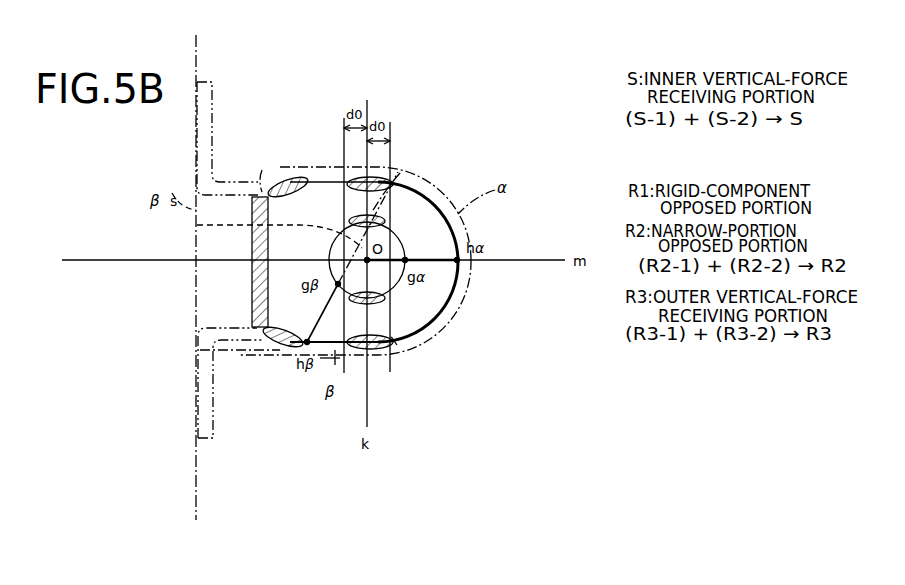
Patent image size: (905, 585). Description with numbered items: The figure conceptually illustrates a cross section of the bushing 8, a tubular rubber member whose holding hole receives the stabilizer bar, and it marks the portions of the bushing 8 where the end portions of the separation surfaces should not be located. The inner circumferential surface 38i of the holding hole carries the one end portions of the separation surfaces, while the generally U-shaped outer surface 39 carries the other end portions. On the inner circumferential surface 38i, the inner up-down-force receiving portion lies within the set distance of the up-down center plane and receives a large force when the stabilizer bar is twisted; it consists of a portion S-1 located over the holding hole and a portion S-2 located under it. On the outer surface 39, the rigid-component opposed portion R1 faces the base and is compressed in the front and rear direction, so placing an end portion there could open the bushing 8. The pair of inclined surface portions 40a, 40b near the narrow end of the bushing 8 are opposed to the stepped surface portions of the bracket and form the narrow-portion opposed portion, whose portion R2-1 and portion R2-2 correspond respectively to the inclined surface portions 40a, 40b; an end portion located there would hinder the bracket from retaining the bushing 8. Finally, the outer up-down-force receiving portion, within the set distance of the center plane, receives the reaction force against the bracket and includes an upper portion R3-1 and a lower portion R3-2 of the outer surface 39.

The bushing 8 is at (463, 302).
The inner circumferential surface 38i is at (426, 198).
The outer surface 39 is at (450, 320).
The inclined surface portion 40a is at (291, 180).
The inclined surface portion 40b is at (262, 342).
The rigid-component opposed portion R1 is at (250, 283).
The portion of narrow-portion opposed portion R2-1 is at (280, 180).
The portion of narrow-portion opposed portion R2-2 is at (265, 352).
The upper portion of outer up-down-force receiving portion R3-1 is at (403, 160).
The lower portion of outer up-down-force receiving portion R3-2 is at (372, 362).
The portion of inner up-down-force receiving portion S-1 is at (400, 173).
The portion of inner up-down-force receiving portion S-2 is at (397, 345).